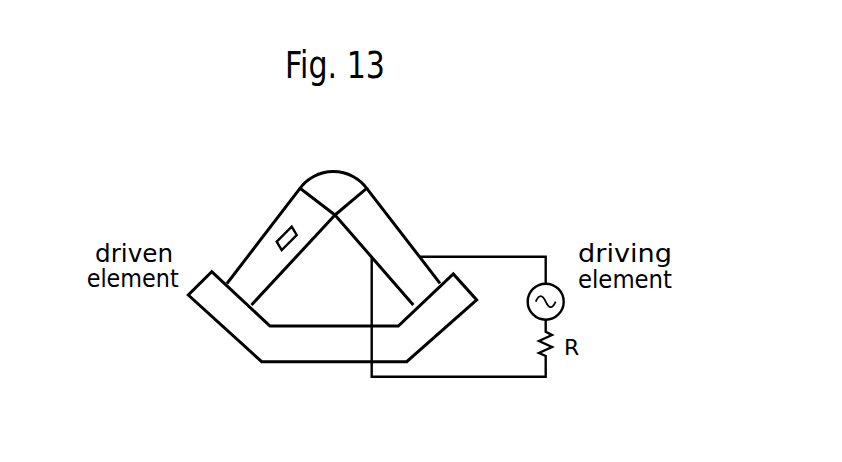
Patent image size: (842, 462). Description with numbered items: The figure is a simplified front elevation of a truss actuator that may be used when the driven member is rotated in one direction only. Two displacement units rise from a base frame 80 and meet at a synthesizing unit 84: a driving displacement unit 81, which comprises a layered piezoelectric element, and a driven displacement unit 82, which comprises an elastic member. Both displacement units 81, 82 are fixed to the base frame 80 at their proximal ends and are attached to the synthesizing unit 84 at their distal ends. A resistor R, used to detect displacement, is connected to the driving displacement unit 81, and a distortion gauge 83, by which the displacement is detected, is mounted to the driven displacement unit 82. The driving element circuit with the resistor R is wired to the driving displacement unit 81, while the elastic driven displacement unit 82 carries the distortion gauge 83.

The base frame 80 is at (287, 348).
The driving displacement unit 81 is at (373, 222).
The driven displacement unit 82 is at (248, 258).
The distortion gauge 83 is at (288, 226).
The synthesizing unit 84 is at (340, 182).